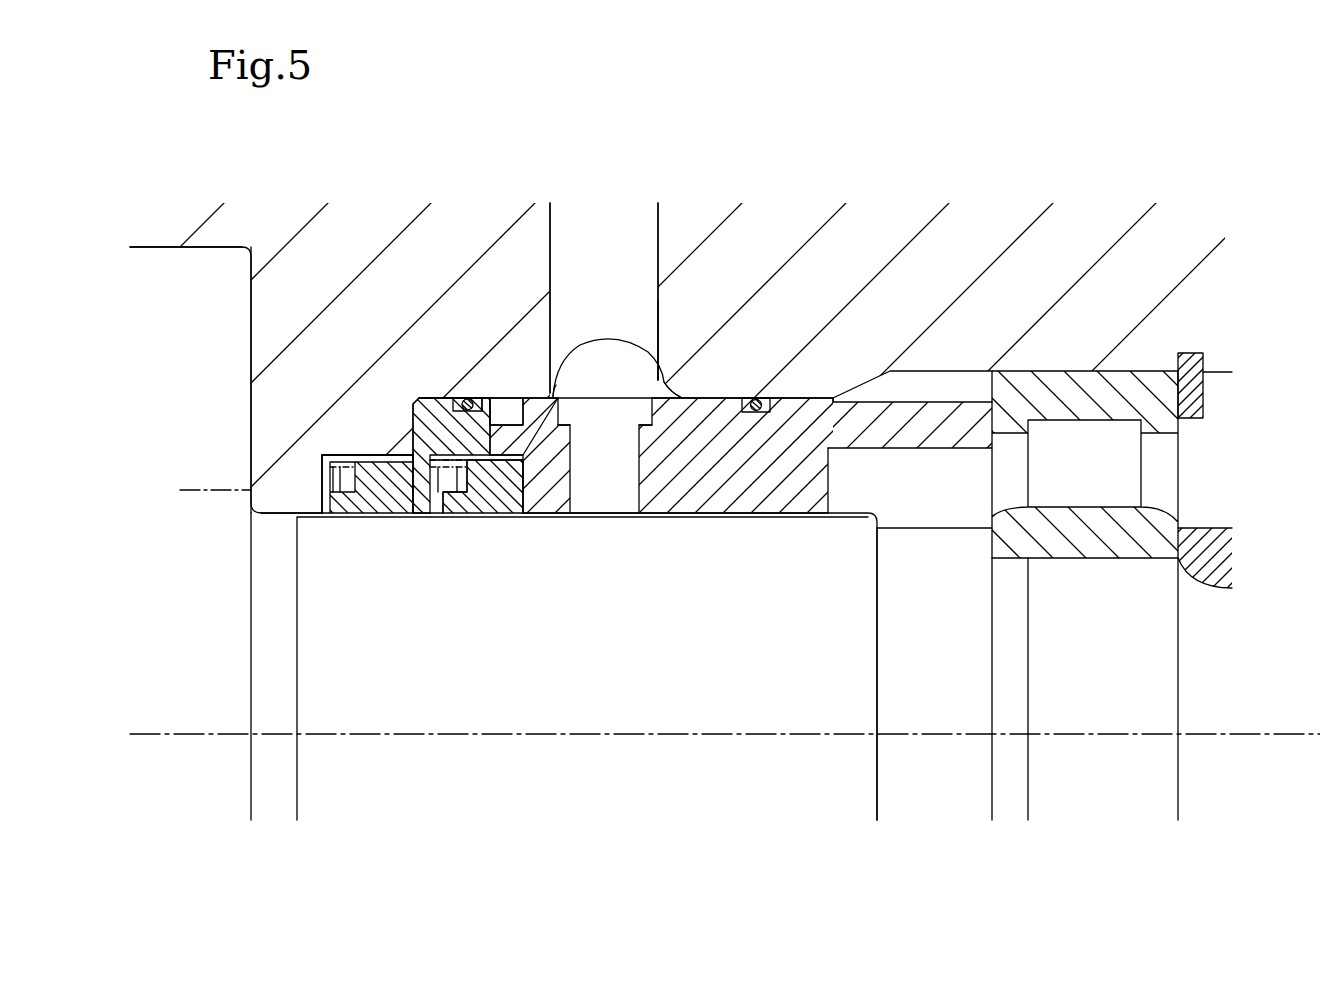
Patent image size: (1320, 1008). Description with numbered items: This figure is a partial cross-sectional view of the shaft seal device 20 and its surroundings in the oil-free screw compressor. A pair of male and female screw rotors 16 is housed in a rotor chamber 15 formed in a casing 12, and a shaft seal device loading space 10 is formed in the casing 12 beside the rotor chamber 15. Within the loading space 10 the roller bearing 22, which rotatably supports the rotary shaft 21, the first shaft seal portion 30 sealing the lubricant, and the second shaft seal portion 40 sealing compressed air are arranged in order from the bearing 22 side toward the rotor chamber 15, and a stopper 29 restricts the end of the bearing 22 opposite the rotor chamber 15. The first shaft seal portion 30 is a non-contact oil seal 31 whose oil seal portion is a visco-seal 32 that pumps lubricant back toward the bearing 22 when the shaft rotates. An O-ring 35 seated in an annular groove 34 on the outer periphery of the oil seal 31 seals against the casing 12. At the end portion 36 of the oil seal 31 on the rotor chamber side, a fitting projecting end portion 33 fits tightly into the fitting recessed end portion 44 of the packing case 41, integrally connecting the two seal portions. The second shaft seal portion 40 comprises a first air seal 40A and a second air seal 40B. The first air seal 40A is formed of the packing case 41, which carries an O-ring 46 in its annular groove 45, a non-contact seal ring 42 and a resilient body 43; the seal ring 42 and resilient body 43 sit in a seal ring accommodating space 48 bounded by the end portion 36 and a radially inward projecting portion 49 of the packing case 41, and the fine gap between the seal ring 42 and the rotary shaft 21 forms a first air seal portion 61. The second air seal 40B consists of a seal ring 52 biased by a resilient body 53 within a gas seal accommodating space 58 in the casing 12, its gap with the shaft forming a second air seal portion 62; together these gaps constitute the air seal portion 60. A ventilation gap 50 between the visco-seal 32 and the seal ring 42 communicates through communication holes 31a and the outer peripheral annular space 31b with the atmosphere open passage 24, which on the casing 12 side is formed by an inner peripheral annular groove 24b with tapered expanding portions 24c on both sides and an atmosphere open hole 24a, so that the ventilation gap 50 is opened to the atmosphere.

The shaft seal device loading space 10 is at (740, 515).
The casing 12 is at (985, 248).
The rotor chamber 15 is at (236, 247).
The screw rotors 16 is at (235, 297).
The shaft seal device 20 is at (347, 158).
The rotary shaft 21 is at (862, 695).
The bearing 22 is at (1106, 386).
The atmosphere open passage 24 is at (651, 254).
The atmosphere open hole 24a is at (647, 327).
The inner peripheral annular groove 24b is at (620, 360).
The tapered expanding portions 24c is at (553, 393).
The stopper 29 is at (1207, 345).
The first shaft seal portion 30 is at (467, 198).
The oil seal 31 is at (708, 427).
The communication hole 31a is at (583, 517).
The outer peripheral annular space 31b is at (613, 412).
The visco-seal 32 is at (775, 513).
The fitting projecting end portion 33 is at (519, 410).
The recessed portion 34 is at (744, 396).
The O-ring 35 is at (763, 396).
The end portion 36 is at (548, 427).
The second shaft seal portion 40 is at (347, 200).
The first air seal 40A is at (436, 380).
The second air seal 40B is at (364, 444).
The packing case 41 is at (430, 420).
The seal ring 42 is at (500, 517).
The resilient body 43 is at (420, 517).
The fitting recessed end portion 44 is at (500, 424).
The recessed portion 45 is at (455, 396).
The O-ring 46 is at (468, 411).
The seal ring accommodating space 48 is at (412, 452).
The projecting portion 49 is at (470, 517).
The ventilation gap 50 is at (590, 497).
The seal ring 52 is at (352, 517).
The resilient body 53 is at (322, 480).
The gas seal accommodating space 58 is at (340, 460).
The air seal portion 60 is at (507, 833).
The first air seal portion 61 is at (487, 517).
The second air seal portion 62 is at (383, 517).